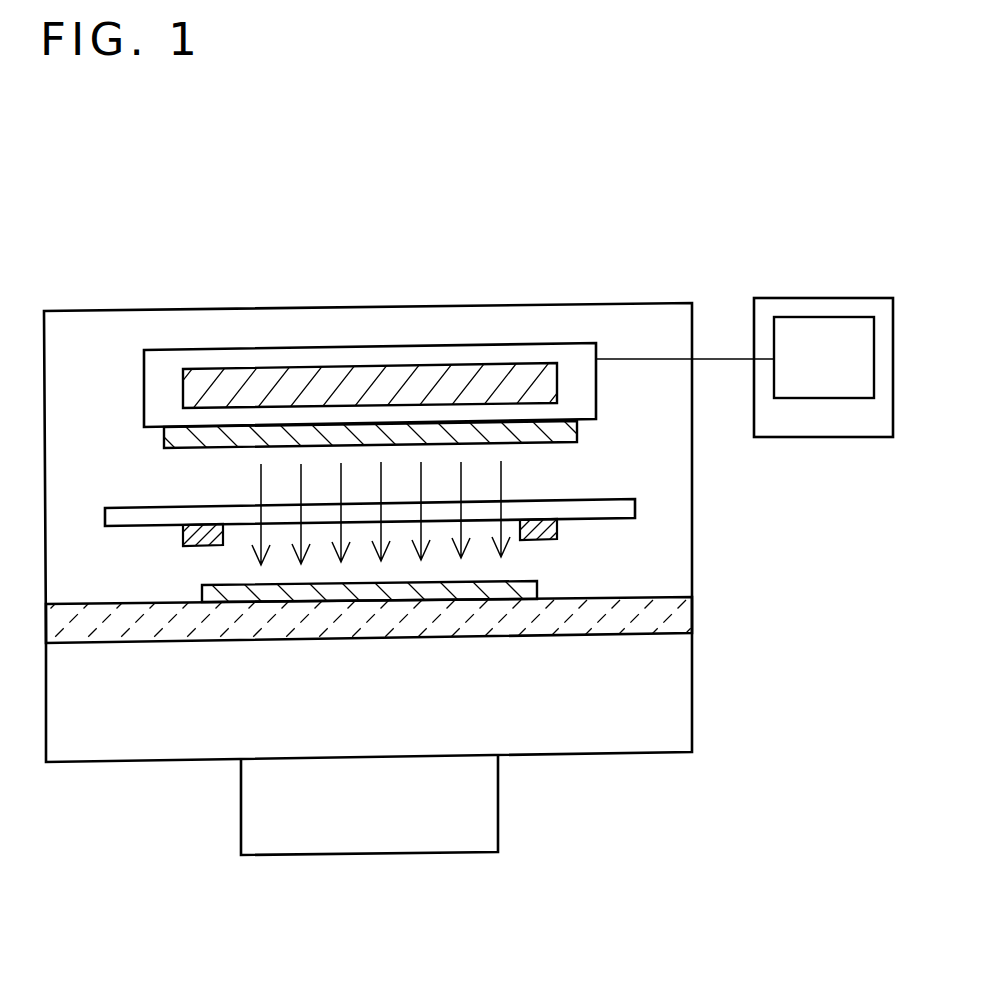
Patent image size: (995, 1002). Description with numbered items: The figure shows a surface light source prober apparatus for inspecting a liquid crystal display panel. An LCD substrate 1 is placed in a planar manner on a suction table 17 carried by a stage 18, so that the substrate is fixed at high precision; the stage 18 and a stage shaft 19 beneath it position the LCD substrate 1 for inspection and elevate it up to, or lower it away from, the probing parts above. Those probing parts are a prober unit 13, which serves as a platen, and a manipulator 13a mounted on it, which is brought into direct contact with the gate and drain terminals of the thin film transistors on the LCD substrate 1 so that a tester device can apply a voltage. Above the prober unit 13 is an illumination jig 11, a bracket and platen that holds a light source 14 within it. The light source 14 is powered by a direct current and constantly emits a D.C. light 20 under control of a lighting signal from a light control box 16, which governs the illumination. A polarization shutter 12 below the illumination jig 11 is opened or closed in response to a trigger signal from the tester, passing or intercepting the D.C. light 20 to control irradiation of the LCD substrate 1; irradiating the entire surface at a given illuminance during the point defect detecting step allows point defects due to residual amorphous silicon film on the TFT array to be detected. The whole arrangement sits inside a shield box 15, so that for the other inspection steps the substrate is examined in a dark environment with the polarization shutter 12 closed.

The LCD substrate 1 is at (203, 595).
The illumination jig 11 is at (215, 350).
The polarization shutter 12 is at (164, 443).
The prober unit 13 is at (635, 507).
The manipulator 13a is at (557, 533).
The light source 14 is at (386, 365).
The shield box 15 is at (528, 304).
The light control box 16 is at (822, 298).
The suction table 17 is at (693, 608).
The stage 18 is at (613, 755).
The stage shaft 19 is at (370, 855).
The D.C. light 20 is at (500, 478).